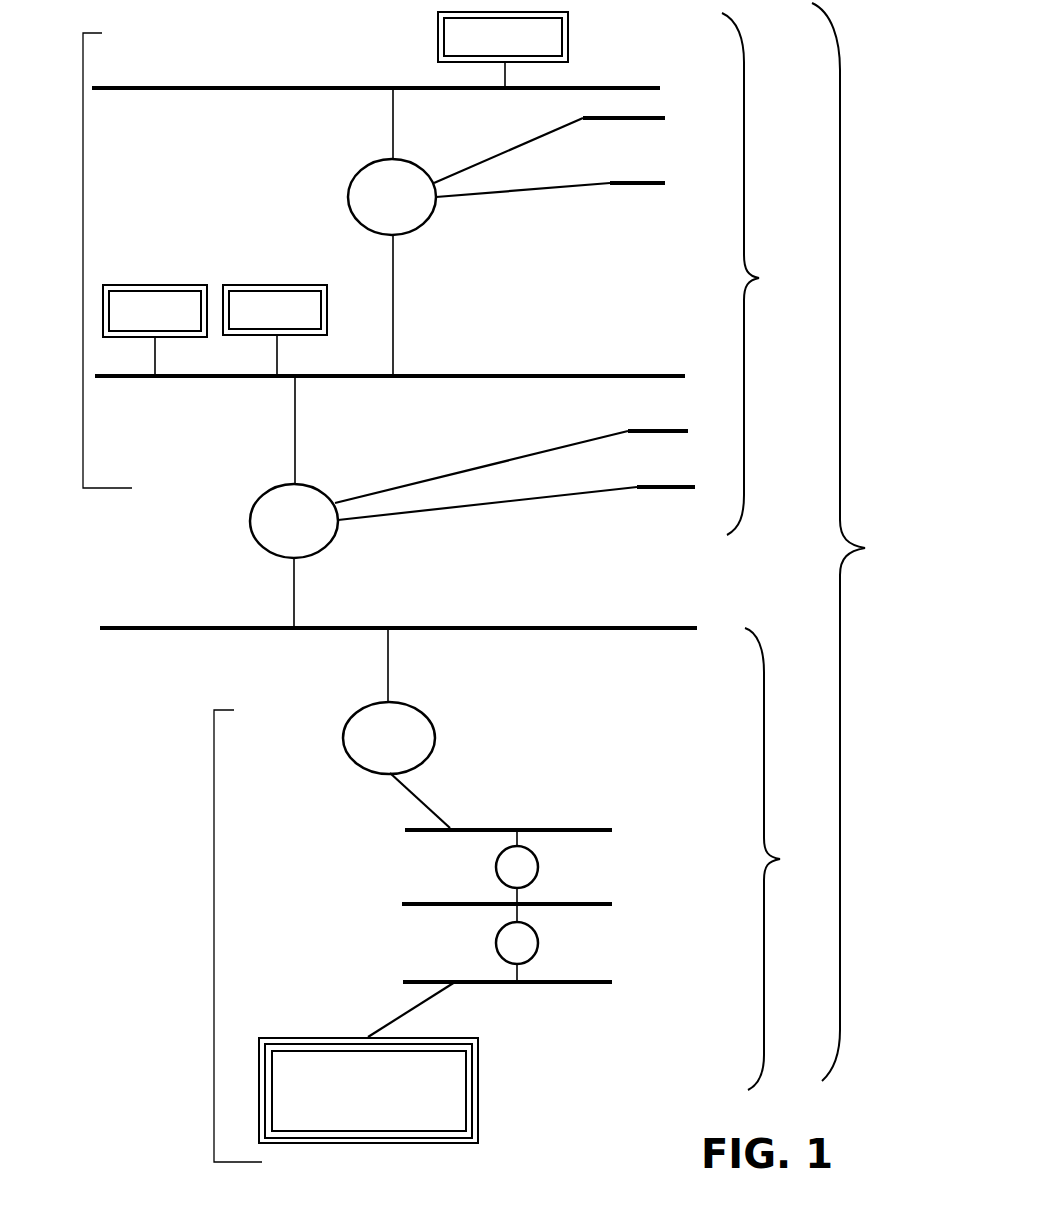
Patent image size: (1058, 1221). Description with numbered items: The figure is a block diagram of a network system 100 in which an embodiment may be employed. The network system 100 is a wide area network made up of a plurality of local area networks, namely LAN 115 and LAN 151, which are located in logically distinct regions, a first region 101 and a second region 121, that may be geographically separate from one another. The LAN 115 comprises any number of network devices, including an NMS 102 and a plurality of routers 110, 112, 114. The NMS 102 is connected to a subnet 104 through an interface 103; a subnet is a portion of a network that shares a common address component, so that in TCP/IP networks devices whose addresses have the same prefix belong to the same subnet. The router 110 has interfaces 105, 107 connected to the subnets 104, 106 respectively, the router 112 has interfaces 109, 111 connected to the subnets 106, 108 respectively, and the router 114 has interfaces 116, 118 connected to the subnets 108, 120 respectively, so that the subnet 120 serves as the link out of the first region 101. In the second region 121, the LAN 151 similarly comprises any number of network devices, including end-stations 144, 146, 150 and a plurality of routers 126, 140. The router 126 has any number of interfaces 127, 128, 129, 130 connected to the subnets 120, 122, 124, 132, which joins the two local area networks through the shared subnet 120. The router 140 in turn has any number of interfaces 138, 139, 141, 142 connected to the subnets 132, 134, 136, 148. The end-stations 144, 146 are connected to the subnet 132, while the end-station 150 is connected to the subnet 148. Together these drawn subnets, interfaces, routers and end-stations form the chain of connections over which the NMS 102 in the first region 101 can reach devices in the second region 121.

The network system 100 is at (861, 542).
The first region 101 is at (785, 859).
The NMS 102 is at (368, 1090).
The interface 103 is at (396, 1015).
The subnet 104 is at (529, 982).
The interface 105 is at (520, 973).
The subnet 106 is at (529, 904).
The interface 107 is at (517, 912).
The subnet 108 is at (530, 828).
The interface 109 is at (517, 898).
The router 110 is at (517, 943).
The interface 111 is at (517, 838).
The router 112 is at (517, 867).
The router 114 is at (389, 738).
The LAN 115 is at (216, 936).
The interface 116 is at (435, 800).
The interface 118 is at (415, 665).
The subnet 120 is at (420, 628).
The second region 121 is at (766, 274).
The subnet 122 is at (689, 487).
The subnet 124 is at (681, 431).
The router 126 is at (294, 521).
The interface 127 is at (295, 620).
The interface 128 is at (605, 495).
The interface 129 is at (598, 437).
The interface 130 is at (295, 410).
The subnet 132 is at (411, 375).
The subnet 134 is at (659, 181).
The subnet 136 is at (646, 126).
The interface 138 is at (393, 310).
The interface 139 is at (577, 191).
The router 140 is at (392, 197).
The interface 141 is at (572, 121).
The interface 142 is at (393, 100).
The end-station 144 is at (275, 330).
The end-station 146 is at (155, 330).
The subnet 148 is at (397, 88).
The end-station 150 is at (503, 50).
The LAN 151 is at (86, 260).